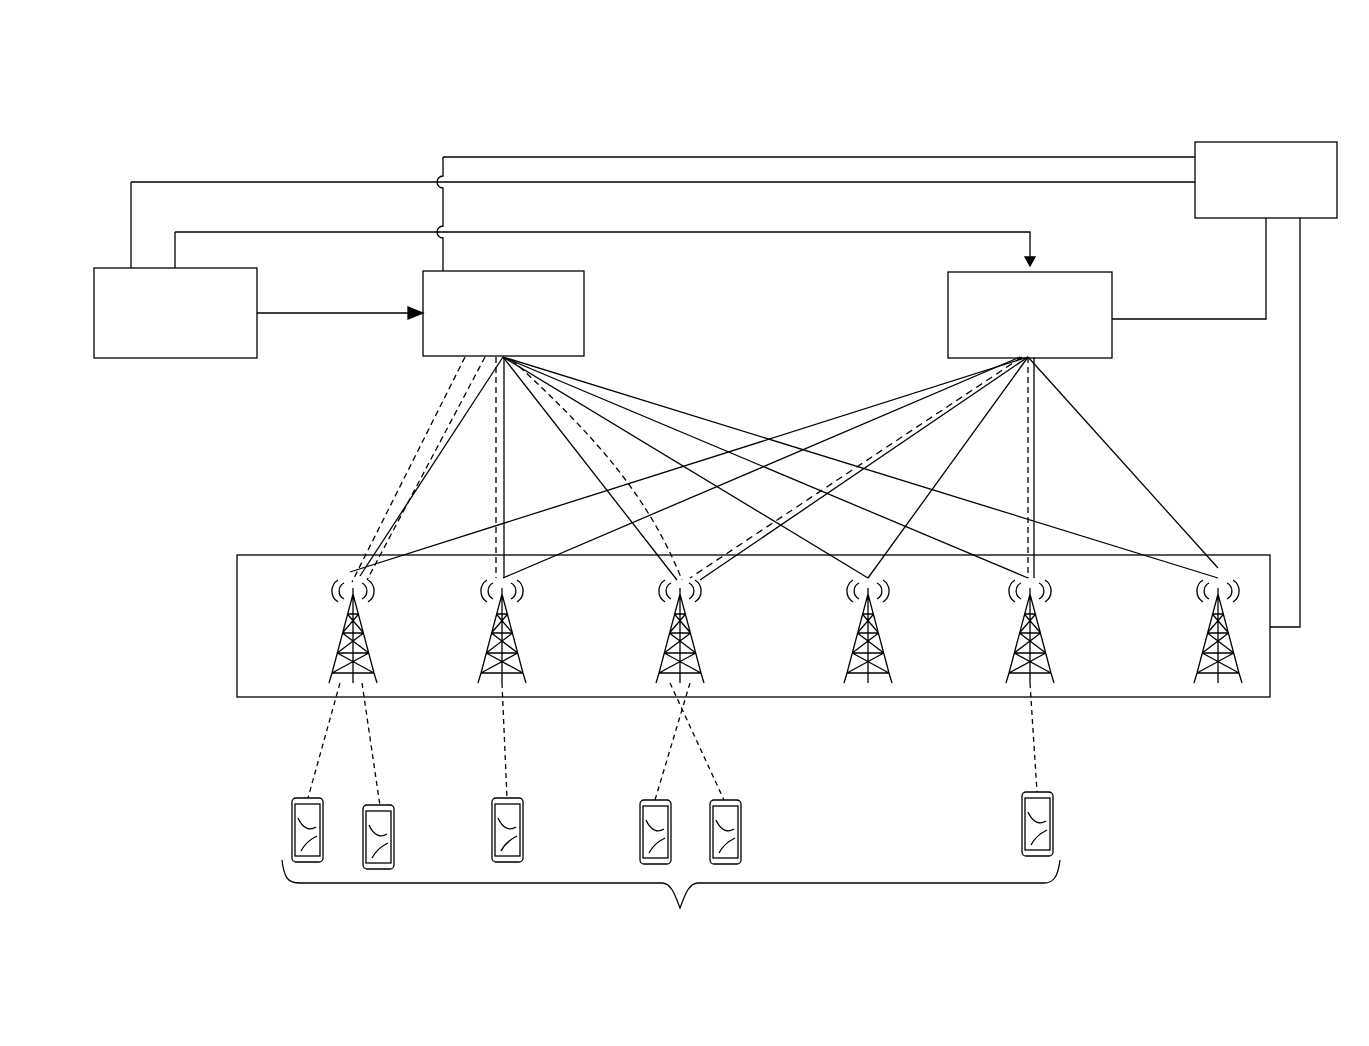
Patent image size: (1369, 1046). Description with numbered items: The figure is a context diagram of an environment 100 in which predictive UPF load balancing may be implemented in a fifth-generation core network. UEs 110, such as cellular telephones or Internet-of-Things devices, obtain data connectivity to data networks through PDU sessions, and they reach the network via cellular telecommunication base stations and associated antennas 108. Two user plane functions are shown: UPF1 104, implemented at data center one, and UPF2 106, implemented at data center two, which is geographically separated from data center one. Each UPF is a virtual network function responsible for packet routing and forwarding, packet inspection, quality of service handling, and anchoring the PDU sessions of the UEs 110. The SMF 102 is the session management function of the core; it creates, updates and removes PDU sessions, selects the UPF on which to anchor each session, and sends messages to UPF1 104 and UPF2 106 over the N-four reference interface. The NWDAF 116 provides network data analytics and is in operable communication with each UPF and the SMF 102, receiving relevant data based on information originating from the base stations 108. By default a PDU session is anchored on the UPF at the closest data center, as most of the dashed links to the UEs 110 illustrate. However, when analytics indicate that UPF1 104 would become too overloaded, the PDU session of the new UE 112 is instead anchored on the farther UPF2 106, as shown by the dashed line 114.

The wireless communication system 100 is at (100, 94).
The SMF 102 is at (183, 358).
The UPF1 104 is at (584, 326).
The UPF2 106 is at (1075, 358).
The cellular telecommunication base stations and associated antennas 108 is at (237, 627).
The UEs 110 is at (671, 871).
The UE 112 is at (741, 828).
The dashed line 114 is at (745, 532).
The NWDAF 116 is at (1250, 142).